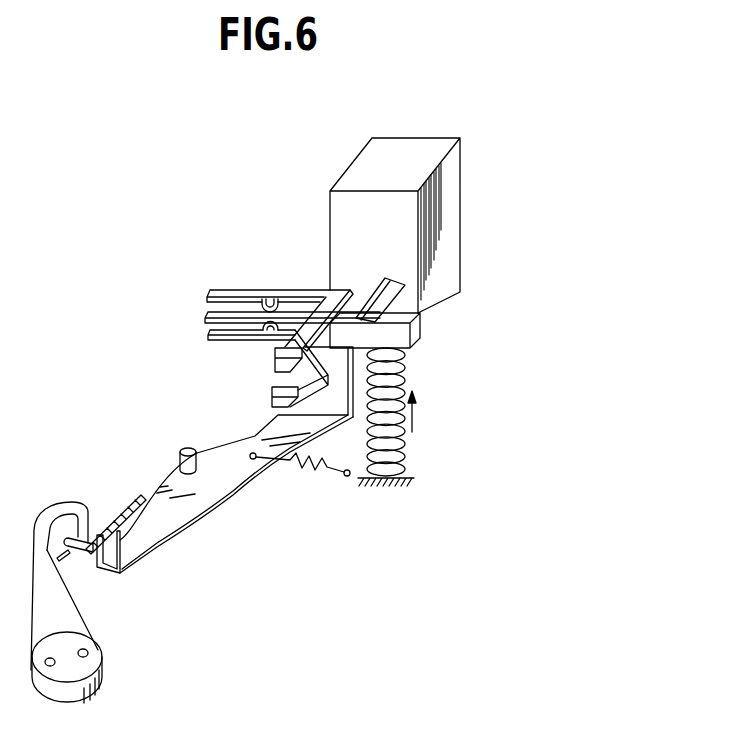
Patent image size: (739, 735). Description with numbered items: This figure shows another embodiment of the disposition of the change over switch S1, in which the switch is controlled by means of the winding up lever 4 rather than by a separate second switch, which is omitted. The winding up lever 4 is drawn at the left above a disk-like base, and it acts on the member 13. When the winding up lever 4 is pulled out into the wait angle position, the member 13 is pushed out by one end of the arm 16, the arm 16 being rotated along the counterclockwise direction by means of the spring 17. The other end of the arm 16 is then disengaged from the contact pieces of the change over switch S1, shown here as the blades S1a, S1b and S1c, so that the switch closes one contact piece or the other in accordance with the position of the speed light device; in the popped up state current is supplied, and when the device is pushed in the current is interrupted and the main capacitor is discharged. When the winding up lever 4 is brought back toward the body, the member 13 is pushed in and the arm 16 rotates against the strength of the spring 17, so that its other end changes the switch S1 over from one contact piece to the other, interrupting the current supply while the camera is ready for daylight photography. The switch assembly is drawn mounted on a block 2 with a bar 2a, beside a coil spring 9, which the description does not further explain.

The electromagnet / solenoid body 2 is at (396, 148).
The plunger bar of solenoid 2a is at (414, 343).
The return spring 9 is at (403, 463).
The change over switch S1 is at (265, 319).
The upper switch contact blade S1a is at (212, 290).
The lower switch contact blade S1b is at (212, 341).
The fixed switch contact blade S1c is at (206, 314).
The arm 16 is at (175, 517).
The spring 17 is at (277, 459).
The member 13 is at (73, 510).
The winding up lever 4 is at (70, 624).